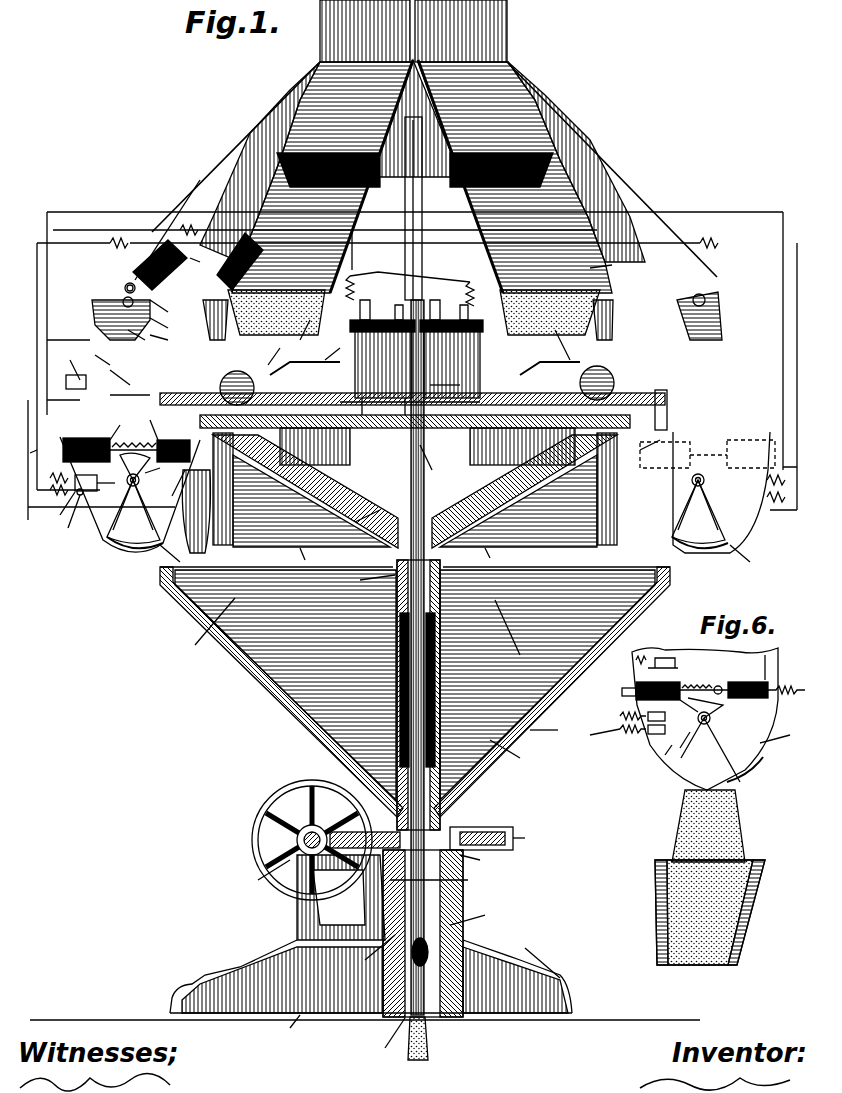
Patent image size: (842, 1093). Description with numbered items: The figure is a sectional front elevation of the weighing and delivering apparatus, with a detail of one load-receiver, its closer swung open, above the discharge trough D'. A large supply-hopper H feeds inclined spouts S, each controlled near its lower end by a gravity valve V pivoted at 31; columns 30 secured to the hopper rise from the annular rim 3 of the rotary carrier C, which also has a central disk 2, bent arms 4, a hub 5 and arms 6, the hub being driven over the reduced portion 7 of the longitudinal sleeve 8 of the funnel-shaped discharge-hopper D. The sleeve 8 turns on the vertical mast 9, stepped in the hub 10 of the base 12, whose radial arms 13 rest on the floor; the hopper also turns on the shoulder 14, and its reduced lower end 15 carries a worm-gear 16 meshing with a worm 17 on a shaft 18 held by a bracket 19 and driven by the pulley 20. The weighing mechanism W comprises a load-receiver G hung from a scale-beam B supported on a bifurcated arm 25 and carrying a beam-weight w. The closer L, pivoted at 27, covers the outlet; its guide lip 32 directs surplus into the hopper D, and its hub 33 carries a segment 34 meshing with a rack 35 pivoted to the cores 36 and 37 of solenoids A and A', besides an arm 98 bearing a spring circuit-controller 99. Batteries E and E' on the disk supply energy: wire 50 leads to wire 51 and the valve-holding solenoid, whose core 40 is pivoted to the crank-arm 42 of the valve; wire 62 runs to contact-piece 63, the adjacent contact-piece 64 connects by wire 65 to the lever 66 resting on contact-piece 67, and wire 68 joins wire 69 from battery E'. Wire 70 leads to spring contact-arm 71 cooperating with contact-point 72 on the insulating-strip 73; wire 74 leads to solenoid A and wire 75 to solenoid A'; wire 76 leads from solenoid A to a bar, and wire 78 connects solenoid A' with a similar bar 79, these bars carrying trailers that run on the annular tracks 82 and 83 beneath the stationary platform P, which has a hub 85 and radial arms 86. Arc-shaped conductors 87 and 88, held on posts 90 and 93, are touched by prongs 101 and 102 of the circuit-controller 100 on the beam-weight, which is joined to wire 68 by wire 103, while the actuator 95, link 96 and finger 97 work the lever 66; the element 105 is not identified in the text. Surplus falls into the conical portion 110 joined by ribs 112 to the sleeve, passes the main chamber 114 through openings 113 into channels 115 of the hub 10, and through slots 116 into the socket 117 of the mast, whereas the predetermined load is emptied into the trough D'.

In FIG. 1, the supply-hopper H is at (500, 14).
In FIG. 1, the inclined spout S is at (434, 177).
In FIG. 1, the column 30 is at (425, 150).
In FIG. 1, the wire 69 is at (423, 255).
In FIG. 1, the vertical mast or post 9 is at (415, 735).
In FIG. 1, the wire 68 is at (402, 208).
In FIG. 1, the wire 62 is at (36, 322).
In FIG. 6, the wire 62 is at (622, 721).
In FIG. 1, the wire 50 is at (378, 272).
In FIG. 1, the wire 51 is at (392, 228).
In FIG. 1, the pivot 31 is at (125, 300).
In FIG. 1, the valve V is at (404, 322).
In FIG. 1, the core 40 is at (138, 280).
In FIG. 1, the crank-arm 42 is at (128, 288).
In FIG. 1, the wire 70 is at (200, 261).
In FIG. 1, the insulating-strip 73 is at (168, 309).
In FIG. 1, the contact-point 72 is at (408, 326).
In FIG. 1, the wire 74 is at (394, 335).
In FIG. 6, the wire 74 is at (781, 657).
In FIG. 1, the spring contact-arm 71 is at (404, 340).
In FIG. 1, the weighing mechanism W is at (408, 352).
In FIG. 1, the scale-beam B is at (412, 395).
In FIG. 1, the beam-weight w is at (406, 374).
In FIG. 1, the battery E is at (382, 349).
In FIG. 1, the battery E' is at (451, 349).
In FIG. 1, the conductor 88 is at (410, 391).
In FIG. 1, the post 93 is at (410, 400).
In FIG. 1, the disk 2 is at (448, 387).
In FIG. 1, the bent arm 4 is at (425, 337).
In FIG. 1, the circuit-controller 100 is at (270, 345).
In FIG. 1, the conductor 87 is at (309, 323).
In FIG. 1, the prong or circuit-closer 101 is at (427, 349).
In FIG. 1, the post 90 is at (338, 347).
In FIG. 1, the wire 103 is at (249, 342).
In FIG. 1, the prong or circuit-closer 102 is at (555, 339).
In FIG. 1, the bar 105 is at (582, 272).
In FIG. 1, the bifurcated arm 25 is at (647, 410).
In FIG. 1, the stationary platform P is at (427, 446).
In FIG. 1, the radial arm 86 is at (430, 449).
In FIG. 1, the hub or sleeve 5 is at (395, 540).
In FIG. 1, the carrier C is at (415, 489).
In FIG. 1, the arm 6 is at (397, 554).
In FIG. 1, the reduced portion 7 is at (375, 582).
In FIG. 1, the track 82 is at (292, 527).
In FIG. 1, the track 83 is at (245, 519).
In FIG. 1, the bar 79 is at (294, 509).
In FIG. 1, the hub 85 is at (361, 521).
In FIG. 1, the annular rim 3 is at (650, 453).
In FIG. 1, the load-receiver G is at (415, 505).
In FIG. 6, the load-receiver G is at (778, 715).
In FIG. 1, the solenoid A' is at (411, 439).
In FIG. 6, the solenoid A' is at (661, 679).
In FIG. 1, the solenoid A is at (457, 446).
In FIG. 6, the solenoid A is at (748, 679).
In FIG. 1, the rack 35 is at (406, 422).
In FIG. 6, the rack 35 is at (700, 688).
In FIG. 1, the core 37 is at (124, 427).
In FIG. 6, the core 37 is at (625, 688).
In FIG. 1, the core 36 is at (149, 424).
In FIG. 6, the core 36 is at (719, 679).
In FIG. 1, the hub 33 is at (415, 482).
In FIG. 6, the hub 33 is at (712, 715).
In FIG. 1, the pivot 27 is at (130, 500).
In FIG. 6, the pivot 27 is at (711, 740).
In FIG. 1, the segment 34 is at (442, 478).
In FIG. 6, the segment 34 is at (681, 718).
In FIG. 1, the wire 76 is at (172, 487).
In FIG. 6, the wire 76 is at (789, 679).
In FIG. 1, the laterally-projecting arm 98 is at (95, 472).
In FIG. 6, the laterally-projecting arm 98 is at (690, 755).
In FIG. 1, the spring circuit-controller 99 is at (97, 492).
In FIG. 6, the spring circuit-controller 99 is at (656, 761).
In FIG. 1, the contact-piece 64 is at (60, 508).
In FIG. 6, the contact-piece 64 is at (648, 730).
In FIG. 1, the contact-piece 63 is at (66, 516).
In FIG. 6, the contact-piece 63 is at (650, 722).
In FIG. 1, the wire 78 is at (397, 519).
In FIG. 6, the wire 78 is at (639, 648).
In FIG. 1, the wire 65 is at (386, 453).
In FIG. 6, the wire 65 is at (622, 707).
In FIG. 1, the closer L is at (418, 543).
In FIG. 6, the closer L is at (750, 770).
In FIG. 1, the guide lip 32 is at (439, 560).
In FIG. 6, the guide lip 32 is at (784, 746).
In FIG. 1, the circuit-controller lever 66 is at (97, 352).
In FIG. 1, the actuator 95 is at (69, 362).
In FIG. 1, the link 96 is at (66, 382).
In FIG. 1, the projecting finger 97 is at (113, 371).
In FIG. 1, the contact-piece 67 is at (45, 400).
In FIG. 1, the wire 75 is at (125, 400).
In FIG. 6, the wire 75 is at (668, 650).
In FIG. 1, the discharge-hopper D is at (415, 692).
In FIG. 1, the rib 112 is at (354, 633).
In FIG. 1, the longitudinal sleeve 8 is at (400, 700).
In FIG. 1, the main chamber 114 is at (516, 755).
In FIG. 1, the conical portion 110 is at (556, 730).
In FIG. 6, the conical portion 110 is at (590, 731).
In FIG. 1, the driver 20 is at (295, 785).
In FIG. 1, the shaft 18 is at (300, 835).
In FIG. 1, the worm 17 is at (263, 874).
In FIG. 1, the bracket 19 is at (297, 922).
In FIG. 1, the opening 113 is at (380, 880).
In FIG. 1, the worm-gear 16 is at (524, 825).
In FIG. 1, the reduced lower end 15 is at (481, 860).
In FIG. 1, the shoulder 14 is at (437, 880).
In FIG. 1, the bearing hub 10 is at (455, 900).
In FIG. 1, the channel 115 is at (423, 939).
In FIG. 1, the slot 116 is at (410, 965).
In FIG. 1, the base 12 is at (370, 985).
In FIG. 1, the radial arm 13 is at (365, 989).
In FIG. 1, the socket 117 is at (398, 1038).
In FIG. 6, the discharge trough D' is at (693, 877).